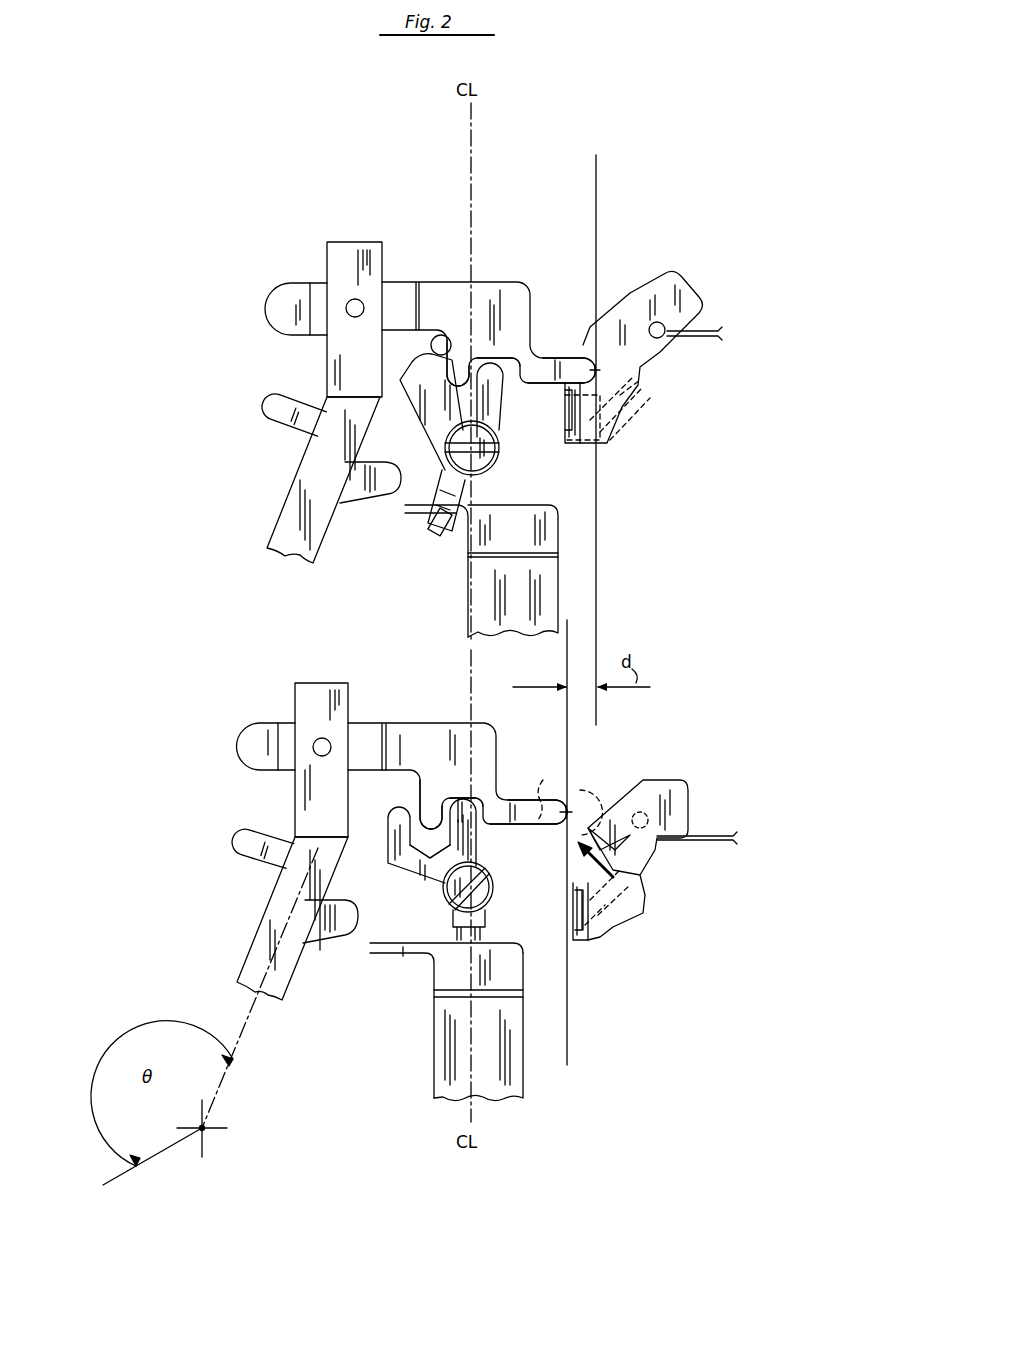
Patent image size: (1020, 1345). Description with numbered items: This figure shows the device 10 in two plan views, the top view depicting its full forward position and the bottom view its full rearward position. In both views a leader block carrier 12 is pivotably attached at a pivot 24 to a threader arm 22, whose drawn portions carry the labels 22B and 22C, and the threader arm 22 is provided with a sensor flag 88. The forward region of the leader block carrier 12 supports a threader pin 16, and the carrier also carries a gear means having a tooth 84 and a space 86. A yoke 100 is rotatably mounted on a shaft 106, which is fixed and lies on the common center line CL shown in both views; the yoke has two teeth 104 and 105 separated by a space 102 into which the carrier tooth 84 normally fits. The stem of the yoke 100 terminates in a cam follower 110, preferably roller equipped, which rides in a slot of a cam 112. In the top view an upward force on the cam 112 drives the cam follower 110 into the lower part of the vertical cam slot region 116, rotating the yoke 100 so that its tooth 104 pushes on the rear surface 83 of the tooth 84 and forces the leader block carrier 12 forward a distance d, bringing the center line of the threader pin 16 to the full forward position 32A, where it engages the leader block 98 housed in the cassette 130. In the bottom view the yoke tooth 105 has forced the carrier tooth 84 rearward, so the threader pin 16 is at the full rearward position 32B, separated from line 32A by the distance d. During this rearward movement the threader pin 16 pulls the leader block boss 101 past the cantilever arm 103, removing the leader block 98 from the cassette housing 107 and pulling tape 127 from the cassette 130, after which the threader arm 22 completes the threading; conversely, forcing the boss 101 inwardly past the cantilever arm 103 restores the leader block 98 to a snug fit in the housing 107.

The device 10 is at (258, 437).
The leader block carrier 12 is at (447, 276).
The threader pin 16 is at (577, 352).
The threader arm 22 is at (258, 886).
The lever arm 22B is at (290, 487).
The lever bar portion 22C is at (340, 242).
The pivot 24 is at (358, 317).
The full forward position center line 32A is at (597, 186).
The full rearward position center line 32B is at (568, 752).
The rear surface 83 is at (431, 345).
The tooth 84 is at (460, 375).
The space 86 is at (512, 386).
The sensor flag 88 is at (342, 942).
The leader block 98 is at (668, 290).
The yoke 100 is at (504, 457).
The leader block boss 101 is at (600, 452).
The space 102 is at (430, 865).
The cantilever arm 103 is at (540, 380).
The tooth 104 is at (396, 390).
The tooth 105 is at (498, 400).
The shaft 106 is at (476, 455).
The cassette housing 107 is at (640, 405).
The cam follower 110 is at (450, 535).
The cam 112 is at (513, 605).
The vertical cam slot region 116 is at (432, 535).
The tape 127 is at (691, 340).
The cassette 130 is at (572, 445).